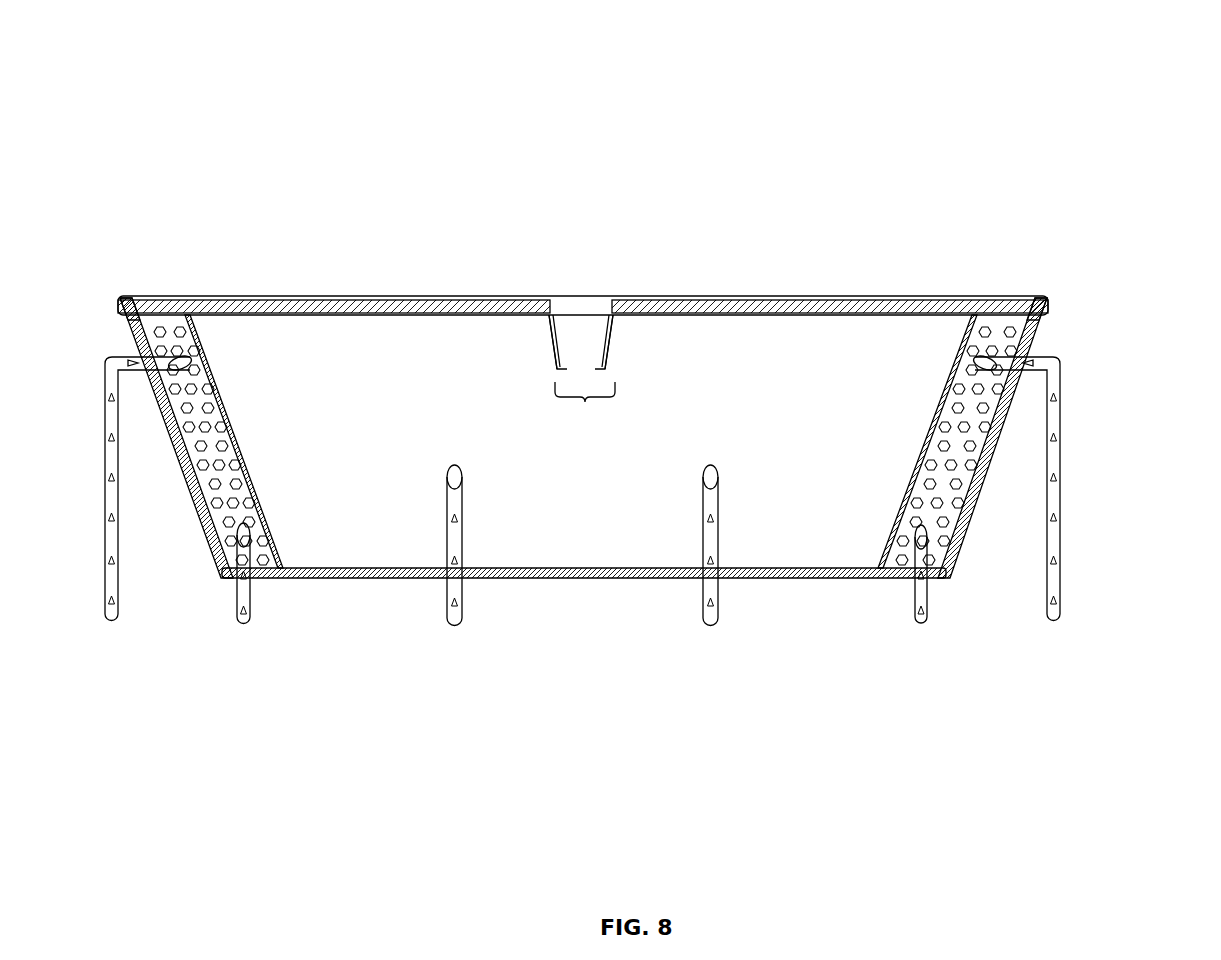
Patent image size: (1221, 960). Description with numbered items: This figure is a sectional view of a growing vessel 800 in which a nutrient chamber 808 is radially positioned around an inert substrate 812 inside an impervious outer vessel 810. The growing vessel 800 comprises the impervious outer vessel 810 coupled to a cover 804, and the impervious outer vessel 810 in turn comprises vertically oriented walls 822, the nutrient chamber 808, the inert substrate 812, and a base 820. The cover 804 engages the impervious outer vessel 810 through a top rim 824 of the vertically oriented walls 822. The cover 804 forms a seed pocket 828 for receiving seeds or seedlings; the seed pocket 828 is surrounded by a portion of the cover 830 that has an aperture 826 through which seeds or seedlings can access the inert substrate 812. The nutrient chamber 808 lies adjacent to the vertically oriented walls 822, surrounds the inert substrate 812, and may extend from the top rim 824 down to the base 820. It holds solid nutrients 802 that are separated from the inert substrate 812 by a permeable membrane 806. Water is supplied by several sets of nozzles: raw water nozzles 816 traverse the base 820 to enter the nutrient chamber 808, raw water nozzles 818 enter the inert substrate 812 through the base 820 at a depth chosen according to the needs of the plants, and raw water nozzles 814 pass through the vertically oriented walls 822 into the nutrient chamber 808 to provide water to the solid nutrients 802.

The growing vessel 800 is at (1130, 68).
The solid nutrients 802 is at (1018, 330).
The cover 804 is at (985, 298).
The permeable membrane 806 is at (262, 497).
The nutrient chamber 808 is at (245, 403).
The impervious outer vessel 810 is at (595, 616).
The inert substrate 812 is at (738, 325).
The raw water nozzles 814 is at (108, 622).
The raw water nozzles 816 is at (240, 628).
The raw water nozzles 818 is at (450, 625).
The base 820 is at (760, 578).
The vertically oriented walls 822 is at (181, 460).
The top rim 824 is at (117, 299).
The aperture 826 is at (618, 397).
The seed pocket 828 is at (576, 330).
The portion of the cover 830 is at (606, 332).